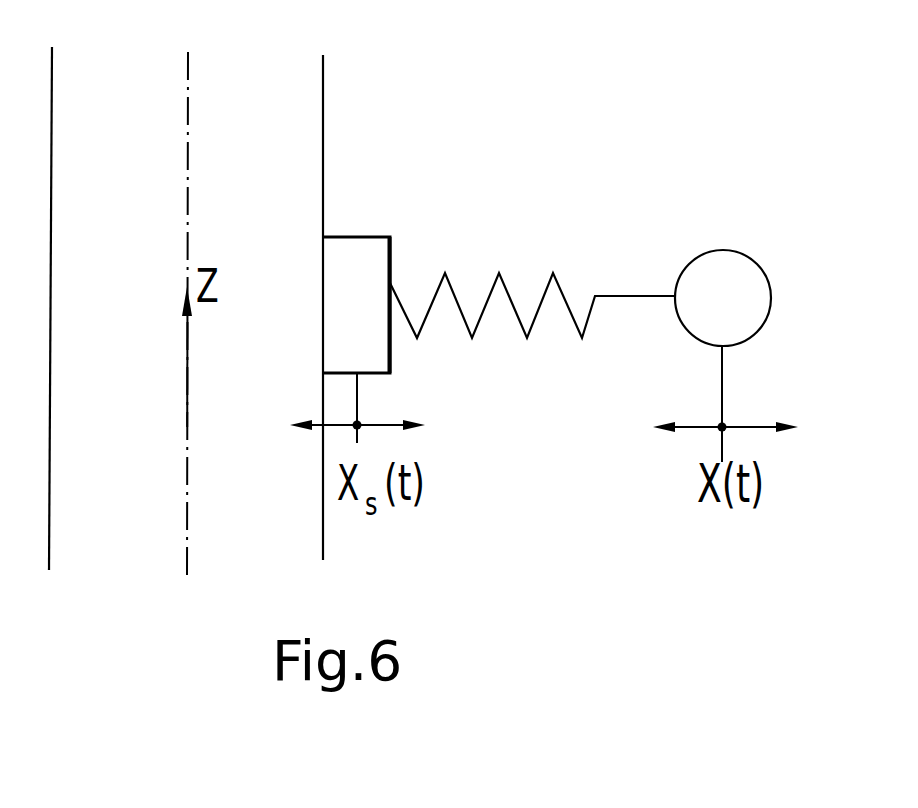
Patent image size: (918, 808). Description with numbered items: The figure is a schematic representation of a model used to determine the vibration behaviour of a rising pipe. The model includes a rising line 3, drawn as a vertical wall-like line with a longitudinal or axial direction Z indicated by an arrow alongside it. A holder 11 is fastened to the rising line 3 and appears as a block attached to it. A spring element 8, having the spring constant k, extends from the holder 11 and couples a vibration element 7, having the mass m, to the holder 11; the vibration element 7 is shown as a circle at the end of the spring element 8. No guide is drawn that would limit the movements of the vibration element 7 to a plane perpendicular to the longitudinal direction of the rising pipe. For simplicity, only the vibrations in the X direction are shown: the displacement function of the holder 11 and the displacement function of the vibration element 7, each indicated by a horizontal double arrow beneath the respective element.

The rising line 3 is at (323, 520).
The holder 11 is at (358, 252).
The spring element 8 is at (510, 293).
The vibration element 7 is at (745, 270).